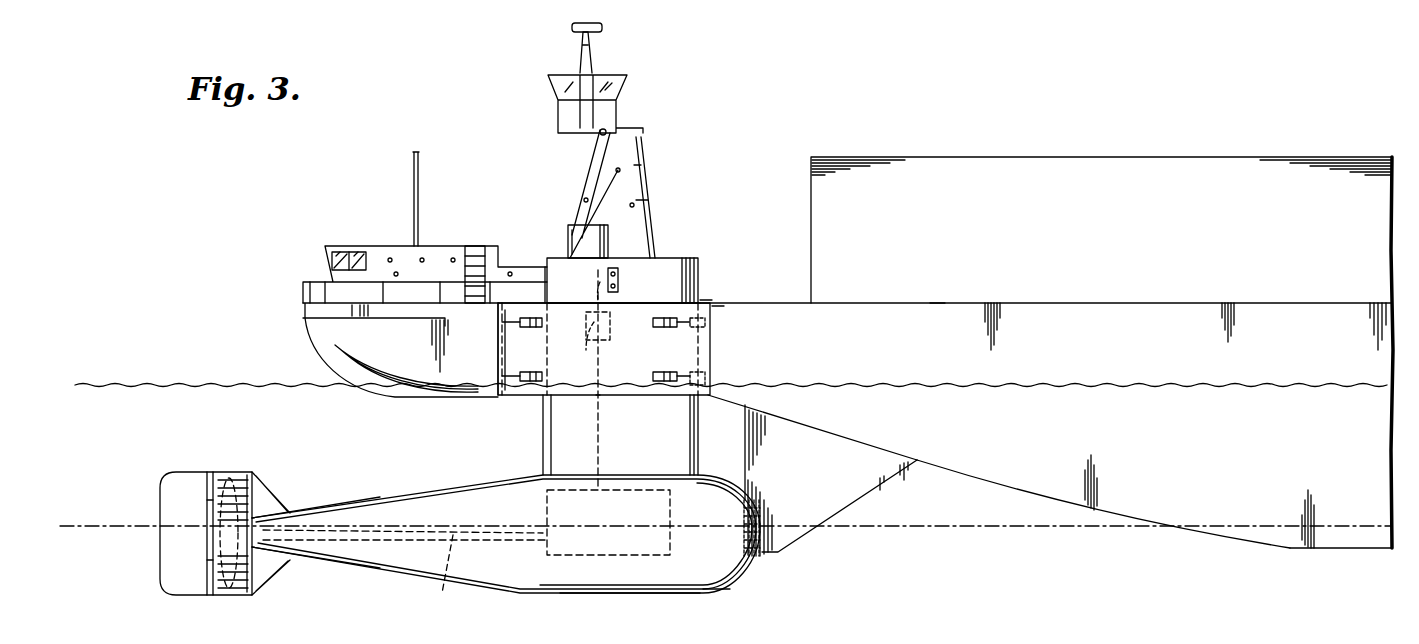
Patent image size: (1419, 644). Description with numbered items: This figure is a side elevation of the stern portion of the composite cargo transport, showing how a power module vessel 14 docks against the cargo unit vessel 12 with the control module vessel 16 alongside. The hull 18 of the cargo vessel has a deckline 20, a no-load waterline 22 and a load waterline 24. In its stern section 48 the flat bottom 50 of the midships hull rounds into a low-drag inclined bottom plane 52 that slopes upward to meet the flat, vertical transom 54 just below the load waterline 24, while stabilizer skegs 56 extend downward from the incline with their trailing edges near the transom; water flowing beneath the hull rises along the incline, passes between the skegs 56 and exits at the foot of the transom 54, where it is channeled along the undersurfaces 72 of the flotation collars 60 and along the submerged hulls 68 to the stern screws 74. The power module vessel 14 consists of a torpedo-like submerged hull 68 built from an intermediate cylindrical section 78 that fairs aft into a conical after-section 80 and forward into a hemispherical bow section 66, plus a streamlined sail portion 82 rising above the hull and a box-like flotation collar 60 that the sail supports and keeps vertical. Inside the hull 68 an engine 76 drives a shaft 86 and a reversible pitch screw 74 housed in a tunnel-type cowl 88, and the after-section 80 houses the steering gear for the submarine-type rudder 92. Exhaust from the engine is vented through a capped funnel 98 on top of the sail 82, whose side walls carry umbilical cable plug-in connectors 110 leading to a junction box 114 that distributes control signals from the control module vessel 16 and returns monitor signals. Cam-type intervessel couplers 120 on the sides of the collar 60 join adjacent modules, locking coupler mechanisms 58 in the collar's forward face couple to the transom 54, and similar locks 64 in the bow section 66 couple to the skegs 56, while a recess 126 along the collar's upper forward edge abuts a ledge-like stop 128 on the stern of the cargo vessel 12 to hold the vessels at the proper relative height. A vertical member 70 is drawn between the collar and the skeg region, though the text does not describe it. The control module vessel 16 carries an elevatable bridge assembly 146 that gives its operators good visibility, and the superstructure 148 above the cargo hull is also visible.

The cargo unit vessel 12 is at (603, 351).
The power module vessel 14 is at (455, 526).
The control module vessel 16 is at (350, 244).
The hull 18 is at (1162, 504).
The deckline 20 is at (1020, 303).
The no-load waterline 22 is at (70, 522).
The load waterline 24 is at (1064, 385).
The stern section 48 is at (938, 328).
The flat bottom 50 is at (1296, 549).
The inclined bottom plane 52 is at (838, 440).
The transom 54 is at (712, 346).
The stabilizer skegs 56 is at (860, 482).
The locking coupler mechanism 58 is at (712, 323).
The flotation collar 60 is at (497, 345).
The locking coupler mechanisms 64 is at (762, 509).
The hemispherical bow section 66 is at (738, 592).
The submerged hull 68 is at (438, 489).
The vertical plate 70 is at (745, 441).
The undersurfaces 72 is at (609, 397).
The stern screw 74 is at (254, 470).
The engine 76 is at (608, 522).
The intermediate cylindrical section 78 is at (611, 590).
The conical after-section 80 is at (360, 574).
The sail portion 82 is at (676, 258).
The shaft 86 is at (443, 594).
The tunnel-type cowl 88 is at (226, 471).
The rudder 92 is at (185, 471).
The funnel 98 is at (570, 236).
The umbilical cable plug-in connectors 110 is at (618, 282).
The junction box 114 is at (580, 330).
The intervessel couplers 120 is at (667, 316).
The recess 126 is at (724, 308).
The stop 128 is at (712, 303).
The elevatable bridge assembly 146 is at (634, 110).
The barge superstructure 148 is at (920, 157).